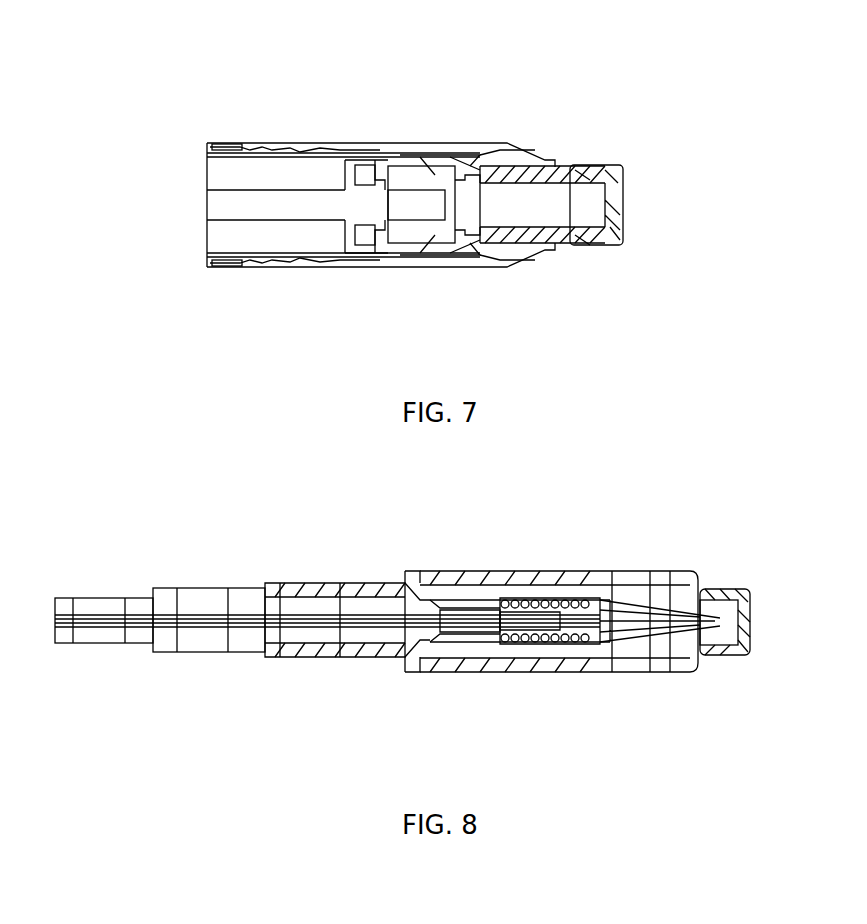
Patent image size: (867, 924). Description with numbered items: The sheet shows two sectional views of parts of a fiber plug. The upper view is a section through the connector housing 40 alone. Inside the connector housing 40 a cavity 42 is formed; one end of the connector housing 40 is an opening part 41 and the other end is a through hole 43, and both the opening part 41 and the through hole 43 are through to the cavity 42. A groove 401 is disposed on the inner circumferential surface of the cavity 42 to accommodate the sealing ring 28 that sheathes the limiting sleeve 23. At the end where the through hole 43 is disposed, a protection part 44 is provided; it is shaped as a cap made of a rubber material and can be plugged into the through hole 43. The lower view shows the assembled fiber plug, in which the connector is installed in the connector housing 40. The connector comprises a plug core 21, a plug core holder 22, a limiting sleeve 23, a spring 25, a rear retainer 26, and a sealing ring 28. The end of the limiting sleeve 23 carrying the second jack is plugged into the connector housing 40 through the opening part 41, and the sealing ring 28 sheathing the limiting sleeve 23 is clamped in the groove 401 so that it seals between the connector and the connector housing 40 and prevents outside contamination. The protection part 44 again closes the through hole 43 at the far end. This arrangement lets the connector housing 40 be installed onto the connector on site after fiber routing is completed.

In FIG. 7, the connector housing 40 is at (417, 163).
In FIG. 8, the connector housing 40 is at (612, 578).
In FIG. 7, the opening part 41 is at (210, 200).
In FIG. 7, the cavity 42 is at (338, 207).
In FIG. 7, the through hole 43 is at (568, 163).
In FIG. 7, the protection part 44 is at (588, 167).
In FIG. 8, the protection part 44 is at (722, 657).
In FIG. 8, the plug core 21 is at (402, 580).
In FIG. 8, the plug core holder 22 is at (308, 580).
In FIG. 8, the limiting sleeve 23 is at (480, 658).
In FIG. 8, the spring 25 is at (548, 655).
In FIG. 8, the rear retainer 26 is at (612, 655).
In FIG. 8, the sealing ring 28 is at (560, 598).
In FIG. 8, the groove 401 is at (578, 582).